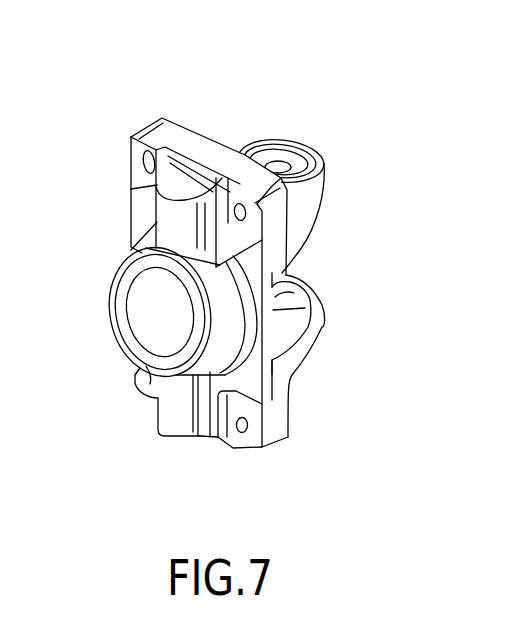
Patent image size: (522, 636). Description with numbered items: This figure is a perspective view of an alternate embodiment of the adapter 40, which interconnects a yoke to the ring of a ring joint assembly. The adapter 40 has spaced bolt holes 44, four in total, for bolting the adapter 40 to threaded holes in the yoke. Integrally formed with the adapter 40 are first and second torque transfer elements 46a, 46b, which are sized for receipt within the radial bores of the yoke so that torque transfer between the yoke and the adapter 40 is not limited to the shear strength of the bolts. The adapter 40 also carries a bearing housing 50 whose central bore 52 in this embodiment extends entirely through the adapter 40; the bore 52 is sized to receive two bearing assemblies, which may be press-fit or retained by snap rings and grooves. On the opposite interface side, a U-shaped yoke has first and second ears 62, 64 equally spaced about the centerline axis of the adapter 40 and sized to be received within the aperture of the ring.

The adapter 40 is at (120, 110).
The bolt holes 44 is at (247, 214).
The first torque transfer element 46a is at (158, 217).
The second torque transfer element 46b is at (170, 410).
The bearing housing 50 is at (122, 257).
The central bore 52 is at (150, 315).
The first ear 62 is at (300, 198).
The second ear 64 is at (313, 338).